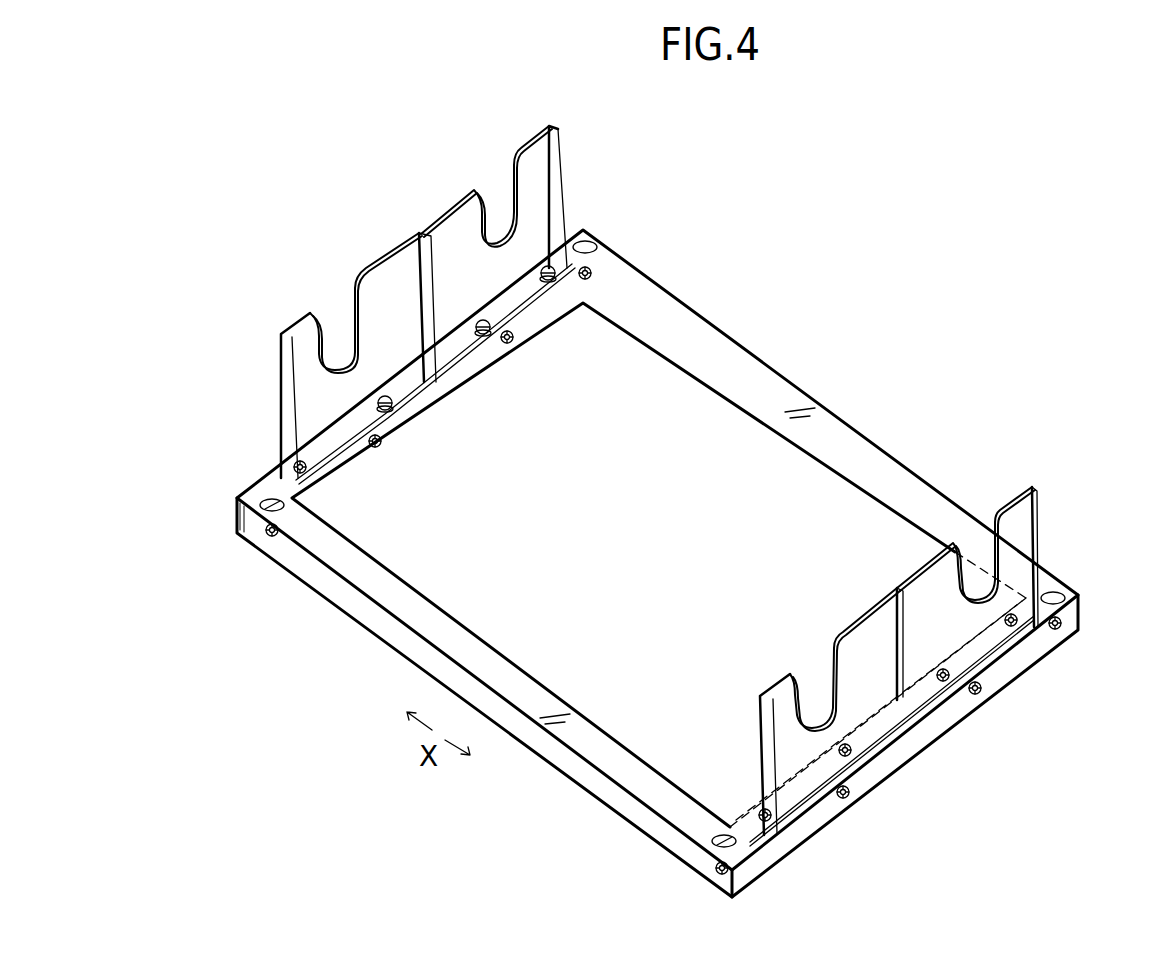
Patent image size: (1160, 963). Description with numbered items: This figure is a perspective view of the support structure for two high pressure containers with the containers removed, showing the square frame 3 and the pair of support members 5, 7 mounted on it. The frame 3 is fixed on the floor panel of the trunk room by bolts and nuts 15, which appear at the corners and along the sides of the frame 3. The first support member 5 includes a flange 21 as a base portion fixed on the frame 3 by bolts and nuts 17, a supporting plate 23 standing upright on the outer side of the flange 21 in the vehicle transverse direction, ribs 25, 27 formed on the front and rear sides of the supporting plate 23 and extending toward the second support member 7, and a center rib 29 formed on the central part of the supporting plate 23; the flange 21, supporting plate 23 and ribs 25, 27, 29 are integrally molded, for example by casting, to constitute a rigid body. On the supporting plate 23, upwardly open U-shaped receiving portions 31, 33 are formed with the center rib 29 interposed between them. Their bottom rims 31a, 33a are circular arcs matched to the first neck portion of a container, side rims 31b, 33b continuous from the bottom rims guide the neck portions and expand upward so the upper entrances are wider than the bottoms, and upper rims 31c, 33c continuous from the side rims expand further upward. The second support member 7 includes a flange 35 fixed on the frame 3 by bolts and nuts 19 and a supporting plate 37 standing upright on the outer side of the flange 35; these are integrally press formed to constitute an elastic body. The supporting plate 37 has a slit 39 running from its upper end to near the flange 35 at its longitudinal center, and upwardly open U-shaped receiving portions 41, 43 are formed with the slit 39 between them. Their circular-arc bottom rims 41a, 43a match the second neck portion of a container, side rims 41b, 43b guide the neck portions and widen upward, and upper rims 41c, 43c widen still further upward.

The frame 3 is at (591, 787).
The first support member 5 is at (424, 280).
The second support member 7 is at (906, 628).
The bolts and nuts 15 is at (592, 278).
The bolts and nuts 17 is at (589, 274).
The bolts and nuts 19 is at (1062, 623).
The flange 21 is at (433, 380).
The supporting plate 23 is at (398, 267).
The rib 25 is at (283, 398).
The rib 27 is at (568, 160).
The center rib 29 is at (428, 233).
The receiving portion 31 is at (313, 271).
The bottom rim 31a is at (337, 362).
The side rim 31b is at (352, 310).
The upper rim 31c is at (357, 277).
The receiving portion 33 is at (537, 201).
The bottom rim 33a is at (495, 243).
The side rim 33b is at (515, 190).
The upper rim 33c is at (521, 151).
The flange 35 is at (755, 812).
The supporting plate 37 is at (890, 730).
The slit 39 is at (889, 730).
The receiving portion 41 is at (792, 645).
The bottom rim 41a is at (826, 722).
The side rim 41b is at (808, 702).
The upper rim 41c is at (838, 588).
The receiving portion 43 is at (979, 566).
The bottom rim 43a is at (980, 578).
The side rim 43b is at (993, 555).
The upper rim 43c is at (953, 545).